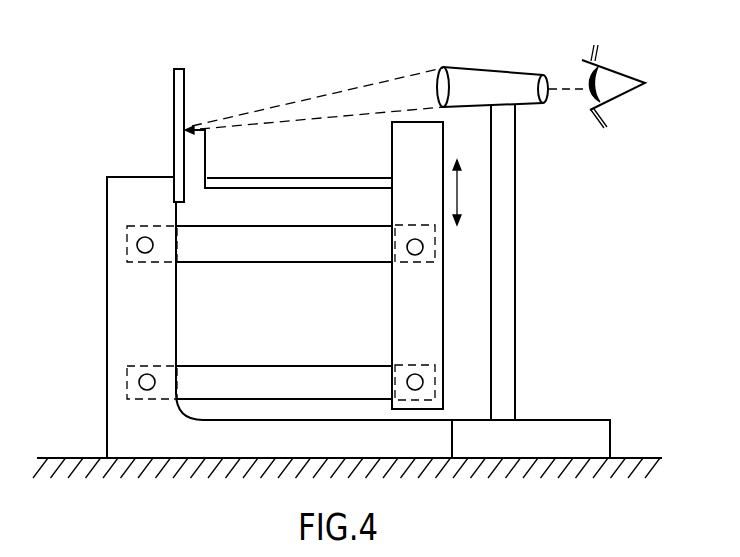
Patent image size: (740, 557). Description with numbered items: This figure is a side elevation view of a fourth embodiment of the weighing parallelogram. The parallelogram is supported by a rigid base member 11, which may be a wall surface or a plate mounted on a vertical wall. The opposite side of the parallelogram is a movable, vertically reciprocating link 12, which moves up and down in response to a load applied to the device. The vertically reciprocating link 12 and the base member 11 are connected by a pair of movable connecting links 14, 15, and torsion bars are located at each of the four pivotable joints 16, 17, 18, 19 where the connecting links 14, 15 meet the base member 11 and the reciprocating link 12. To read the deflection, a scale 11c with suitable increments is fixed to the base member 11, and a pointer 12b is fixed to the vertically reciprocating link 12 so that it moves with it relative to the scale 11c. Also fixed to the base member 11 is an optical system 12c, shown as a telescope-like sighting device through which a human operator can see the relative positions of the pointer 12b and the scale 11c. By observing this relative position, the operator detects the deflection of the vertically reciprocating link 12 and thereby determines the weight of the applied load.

The base member 11 is at (224, 455).
The scale 11c is at (174, 91).
The vertically reciprocating link 12 is at (443, 317).
The pointer 12b is at (313, 178).
The optical system 12c is at (503, 70).
The movable connecting link 14 is at (244, 263).
The movable connecting link 15 is at (303, 365).
The pivotable joint 16 is at (137, 247).
The pivotable joint 17 is at (423, 248).
The pivotable joint 18 is at (423, 383).
The pivotable joint 19 is at (139, 383).